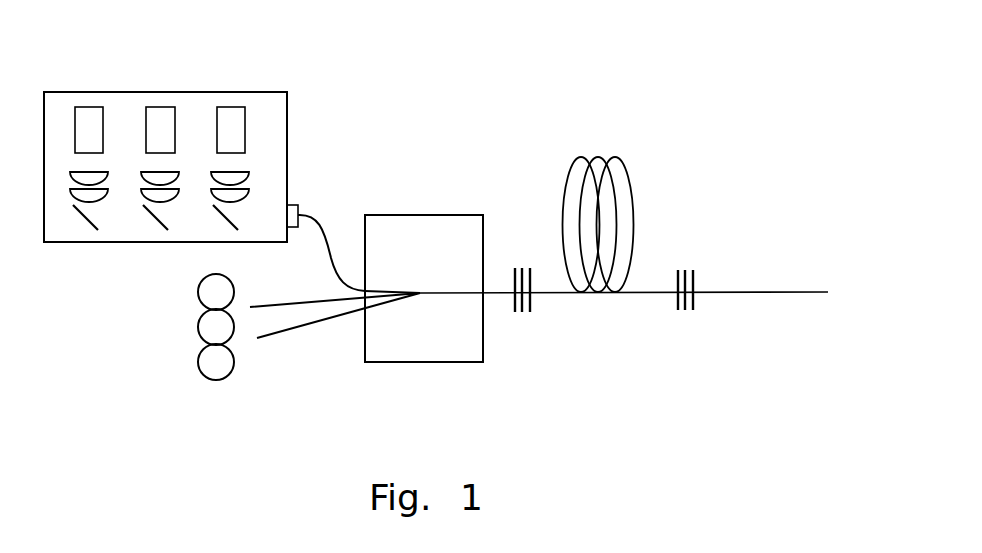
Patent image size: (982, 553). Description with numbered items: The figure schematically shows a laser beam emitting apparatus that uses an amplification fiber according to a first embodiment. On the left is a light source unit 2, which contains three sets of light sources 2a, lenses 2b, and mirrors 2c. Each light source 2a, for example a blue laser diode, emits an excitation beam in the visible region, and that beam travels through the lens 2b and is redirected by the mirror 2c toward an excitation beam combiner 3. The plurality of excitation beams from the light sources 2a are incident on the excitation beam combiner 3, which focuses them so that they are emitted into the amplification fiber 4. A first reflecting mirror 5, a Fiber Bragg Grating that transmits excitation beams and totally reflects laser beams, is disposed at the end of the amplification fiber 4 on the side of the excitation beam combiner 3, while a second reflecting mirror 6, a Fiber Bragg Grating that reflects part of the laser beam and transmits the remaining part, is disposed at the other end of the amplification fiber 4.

The light source unit 2 is at (272, 76).
The light source 2a is at (246, 129).
The lens 2b is at (250, 178).
The mirror 2c is at (217, 215).
The excitation beam combiner 3 is at (447, 214).
The amplification fiber 4 is at (615, 156).
The first reflecting mirror 5 is at (522, 314).
The second reflecting mirror 6 is at (684, 312).